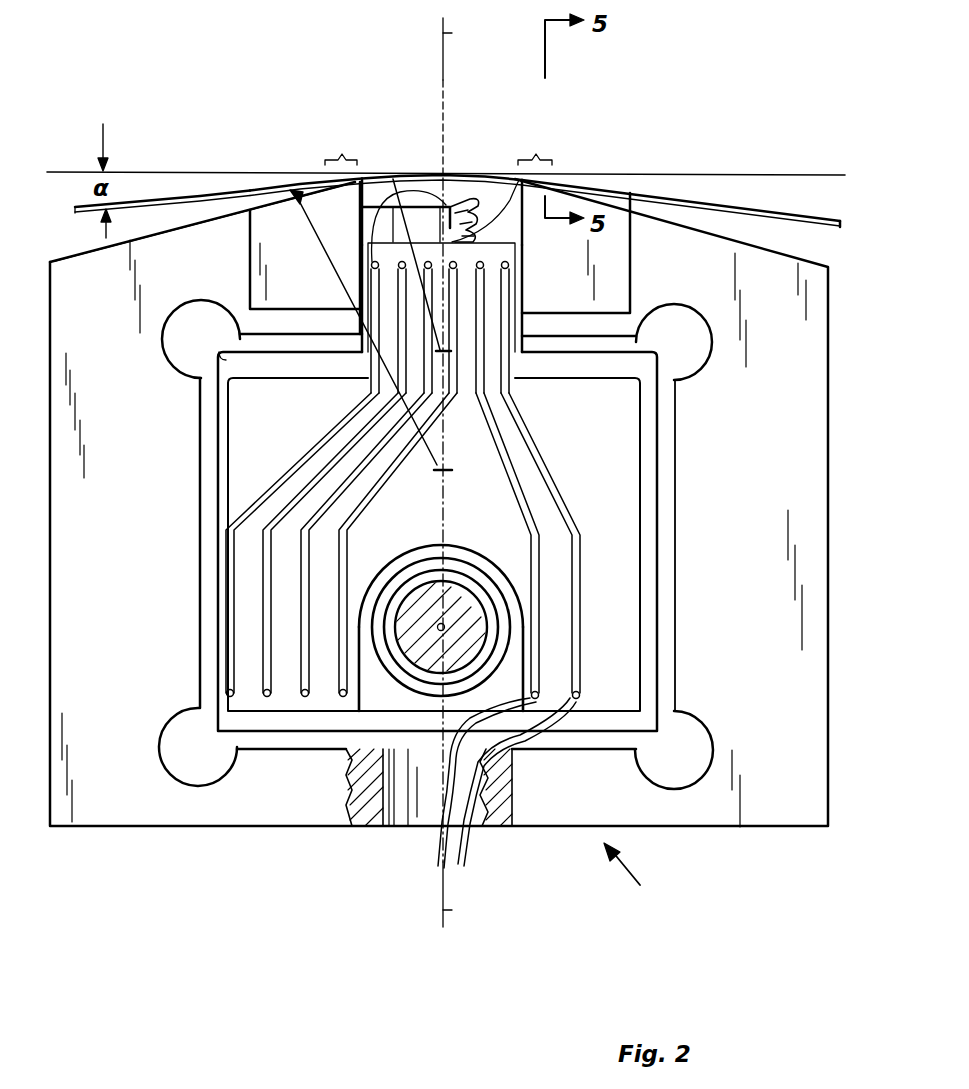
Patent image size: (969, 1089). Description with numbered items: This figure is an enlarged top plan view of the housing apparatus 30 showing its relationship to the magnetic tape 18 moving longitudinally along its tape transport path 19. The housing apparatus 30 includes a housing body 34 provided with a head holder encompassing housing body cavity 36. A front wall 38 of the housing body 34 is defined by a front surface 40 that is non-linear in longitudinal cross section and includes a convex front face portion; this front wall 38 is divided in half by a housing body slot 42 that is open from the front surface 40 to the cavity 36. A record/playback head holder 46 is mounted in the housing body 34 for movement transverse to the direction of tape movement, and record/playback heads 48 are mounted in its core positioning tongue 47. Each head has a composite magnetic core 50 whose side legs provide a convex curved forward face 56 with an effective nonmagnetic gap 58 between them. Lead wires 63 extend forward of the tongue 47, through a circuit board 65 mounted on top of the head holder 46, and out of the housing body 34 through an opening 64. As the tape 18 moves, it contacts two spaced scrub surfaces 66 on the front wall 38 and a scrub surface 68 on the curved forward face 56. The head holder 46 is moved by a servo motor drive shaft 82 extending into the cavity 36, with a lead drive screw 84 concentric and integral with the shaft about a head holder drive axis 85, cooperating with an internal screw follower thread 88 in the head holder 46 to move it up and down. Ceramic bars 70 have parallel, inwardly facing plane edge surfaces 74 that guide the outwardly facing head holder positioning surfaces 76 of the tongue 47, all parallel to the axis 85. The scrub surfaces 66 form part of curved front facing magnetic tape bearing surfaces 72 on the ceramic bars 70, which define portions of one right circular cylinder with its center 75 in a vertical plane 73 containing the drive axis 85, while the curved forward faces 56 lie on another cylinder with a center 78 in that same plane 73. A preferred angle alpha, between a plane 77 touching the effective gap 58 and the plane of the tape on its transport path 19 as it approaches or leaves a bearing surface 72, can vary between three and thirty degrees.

The magnetic tape 18 is at (815, 226).
The tape transport path 19 is at (90, 212).
The housing apparatus 30 is at (633, 876).
The housing body 34 is at (813, 333).
The housing body cavity 36 is at (670, 400).
The front wall 38 is at (708, 216).
The front surface 40 is at (205, 205).
The housing body slot 42 is at (522, 318).
The record/playback head holder 46 is at (243, 367).
The core positioning tongue 47 is at (330, 250).
The record/playback heads 48 is at (457, 195).
The composite magnetic core 50 is at (390, 172).
The curved forward face 56 is at (396, 235).
The effective nonmagnetic gap 58 is at (438, 235).
The lead wires 63 is at (468, 205).
The opening 64 is at (403, 815).
The circuit board 65 is at (628, 620).
The scrub surfaces 66 is at (441, 145).
The scrub surface 68 is at (440, 163).
The ceramic bars 70 is at (280, 230).
The front facing magnetic tape bearing surfaces 72 is at (255, 205).
The vertical plane 73 is at (452, 33).
The plane edge surfaces 74 is at (362, 235).
The center 75 is at (444, 470).
The head holder positioning surfaces 76 is at (340, 333).
The plane 77 is at (93, 172).
The center 78 is at (443, 352).
The servo motor drive shaft 82 is at (473, 570).
The lead drive screw 84 is at (467, 578).
The head holder drive axis 85 is at (445, 628).
The internal screw follower thread 88 is at (402, 576).